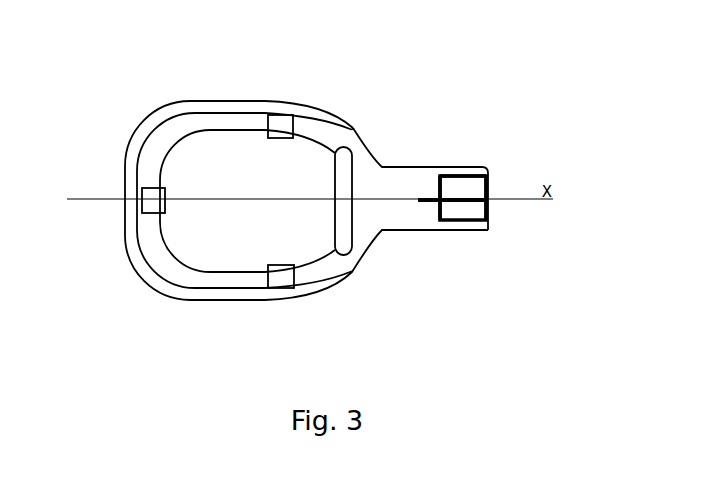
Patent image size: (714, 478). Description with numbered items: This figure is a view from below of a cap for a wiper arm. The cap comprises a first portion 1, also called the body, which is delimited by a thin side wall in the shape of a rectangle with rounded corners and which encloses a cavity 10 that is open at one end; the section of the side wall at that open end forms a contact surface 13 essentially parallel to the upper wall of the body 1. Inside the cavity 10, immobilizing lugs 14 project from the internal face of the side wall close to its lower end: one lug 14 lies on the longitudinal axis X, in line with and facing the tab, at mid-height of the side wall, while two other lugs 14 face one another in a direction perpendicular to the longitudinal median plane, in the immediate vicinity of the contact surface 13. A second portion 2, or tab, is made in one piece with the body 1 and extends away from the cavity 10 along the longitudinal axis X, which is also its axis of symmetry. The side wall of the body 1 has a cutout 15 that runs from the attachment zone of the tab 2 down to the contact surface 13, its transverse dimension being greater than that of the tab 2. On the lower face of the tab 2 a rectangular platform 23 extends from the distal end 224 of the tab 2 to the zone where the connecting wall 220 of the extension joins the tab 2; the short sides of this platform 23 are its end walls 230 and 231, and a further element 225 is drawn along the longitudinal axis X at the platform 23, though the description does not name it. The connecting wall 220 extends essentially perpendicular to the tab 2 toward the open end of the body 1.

The first portion 1 is at (232, 88).
The second portion 2 is at (396, 147).
The cavity 10 is at (225, 243).
The contact surface 13 is at (132, 172).
The immobilizing lug 14 is at (282, 120).
The cutout 15 is at (358, 172).
The platform 23 is at (467, 185).
The connecting wall 220 is at (425, 205).
The distal end 224 is at (492, 172).
The central bar 225 is at (490, 208).
The end wall 230 is at (490, 213).
The end wall 231 is at (437, 185).